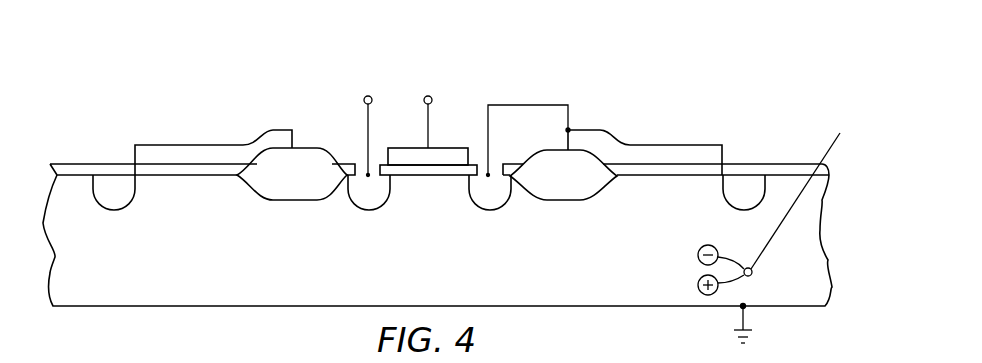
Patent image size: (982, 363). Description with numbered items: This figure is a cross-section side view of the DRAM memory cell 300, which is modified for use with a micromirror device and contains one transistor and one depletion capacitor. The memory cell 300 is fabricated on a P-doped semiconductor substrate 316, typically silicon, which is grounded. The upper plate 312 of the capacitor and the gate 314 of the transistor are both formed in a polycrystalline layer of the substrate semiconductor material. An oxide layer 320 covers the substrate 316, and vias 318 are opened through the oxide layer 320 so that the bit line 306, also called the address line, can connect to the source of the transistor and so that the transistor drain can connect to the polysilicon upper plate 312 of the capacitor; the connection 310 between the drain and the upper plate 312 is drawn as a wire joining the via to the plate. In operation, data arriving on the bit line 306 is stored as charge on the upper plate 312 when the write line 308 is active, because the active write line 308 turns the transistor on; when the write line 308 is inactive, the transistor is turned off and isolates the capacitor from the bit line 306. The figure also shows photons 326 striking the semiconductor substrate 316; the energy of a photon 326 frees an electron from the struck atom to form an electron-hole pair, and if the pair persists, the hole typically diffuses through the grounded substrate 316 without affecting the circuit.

The memory cell 300 is at (298, 70).
The bit line 306 is at (366, 96).
The write line 308 is at (430, 96).
The drain-to-field-plate connection 310 is at (531, 104).
The upper plate 312 is at (193, 143).
The gate 314 is at (453, 147).
The semiconductor substrate 316 is at (312, 278).
The vias 318 is at (355, 172).
The oxide layer 320 is at (425, 175).
The photons 326 is at (822, 160).